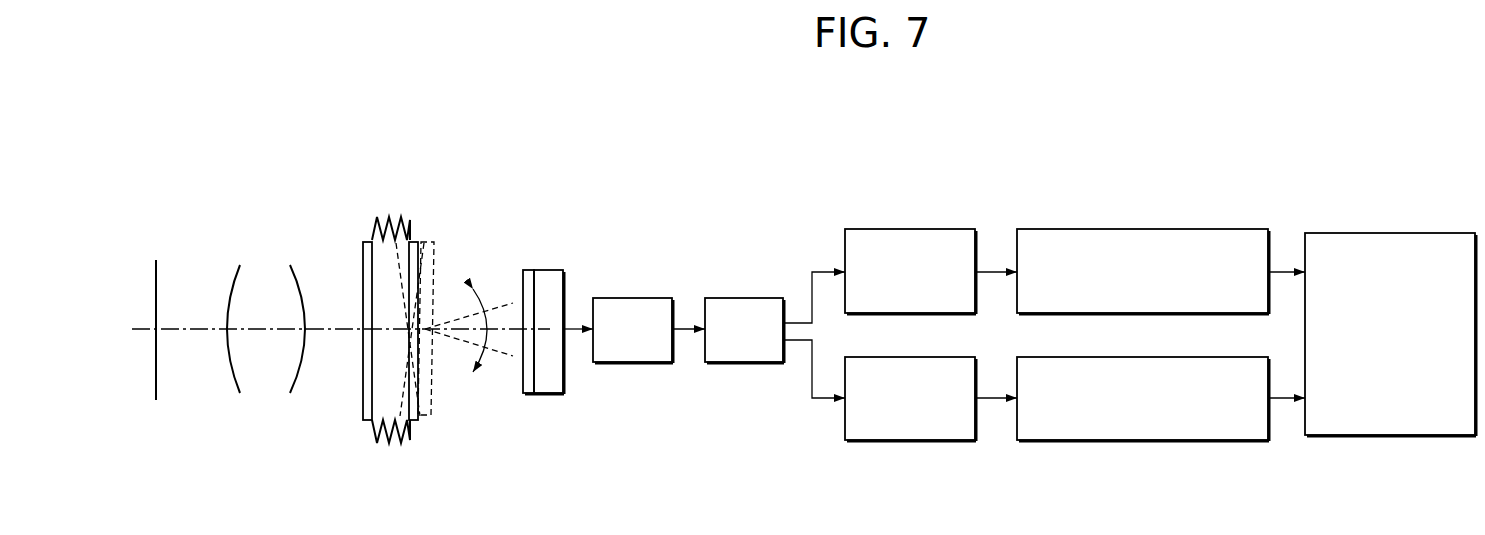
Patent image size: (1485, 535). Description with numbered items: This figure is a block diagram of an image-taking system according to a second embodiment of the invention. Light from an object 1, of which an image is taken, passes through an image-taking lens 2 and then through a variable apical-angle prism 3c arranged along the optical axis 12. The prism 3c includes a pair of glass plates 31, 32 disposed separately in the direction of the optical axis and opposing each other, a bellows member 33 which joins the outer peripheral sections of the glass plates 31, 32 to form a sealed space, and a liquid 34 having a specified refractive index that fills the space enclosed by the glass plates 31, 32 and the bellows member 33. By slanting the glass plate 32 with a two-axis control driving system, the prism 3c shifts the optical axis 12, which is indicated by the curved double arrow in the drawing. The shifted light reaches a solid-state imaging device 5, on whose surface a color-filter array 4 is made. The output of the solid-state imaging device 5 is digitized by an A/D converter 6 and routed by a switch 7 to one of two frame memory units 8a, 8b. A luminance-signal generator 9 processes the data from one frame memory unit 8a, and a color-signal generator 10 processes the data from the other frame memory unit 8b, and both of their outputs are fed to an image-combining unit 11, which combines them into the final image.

The object 1 is at (156, 260).
The image-taking lens 2 is at (267, 258).
The variable apical-angle prism 3c is at (337, 133).
The glass plate 31 is at (367, 240).
The glass plate 32 is at (418, 240).
The bellows member 33 is at (385, 225).
The liquid 34 is at (358, 420).
The color-filter array 4 is at (530, 270).
The solid-state imaging device 5 is at (555, 270).
The A/D converter 6 is at (632, 298).
The switch 7 is at (742, 298).
The frame memory unit 8a is at (910, 229).
The frame memory unit 8b is at (908, 440).
The luminance-signal generator 9 is at (1157, 229).
The color-signal generator 10 is at (1152, 440).
The image-combining unit 11 is at (1372, 233).
The optical axis 12 is at (462, 337).